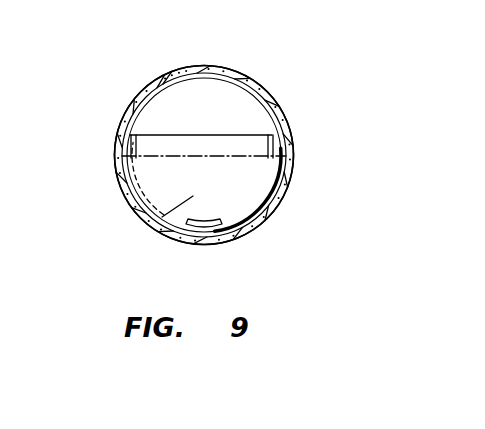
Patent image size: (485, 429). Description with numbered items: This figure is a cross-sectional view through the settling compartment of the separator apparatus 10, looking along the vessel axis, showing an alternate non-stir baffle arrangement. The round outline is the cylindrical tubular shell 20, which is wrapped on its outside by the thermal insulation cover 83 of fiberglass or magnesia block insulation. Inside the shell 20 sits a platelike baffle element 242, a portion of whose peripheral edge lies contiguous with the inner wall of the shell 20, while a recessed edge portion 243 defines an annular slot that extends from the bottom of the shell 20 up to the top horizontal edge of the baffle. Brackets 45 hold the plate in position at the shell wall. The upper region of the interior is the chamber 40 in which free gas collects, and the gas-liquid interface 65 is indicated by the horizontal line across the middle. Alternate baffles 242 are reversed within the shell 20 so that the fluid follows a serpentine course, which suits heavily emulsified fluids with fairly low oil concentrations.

The separator apparatus 10 is at (180, 58).
The cylindrical tubular body or shell 20 is at (132, 108).
The chamber 40 is at (215, 107).
The brackets 45 is at (112, 141).
The gas-liquid interface 65 is at (213, 157).
The thermal insulation cover 83 is at (270, 100).
The platelike baffle elements 242 is at (162, 236).
The recessed edge portion 243 is at (118, 195).